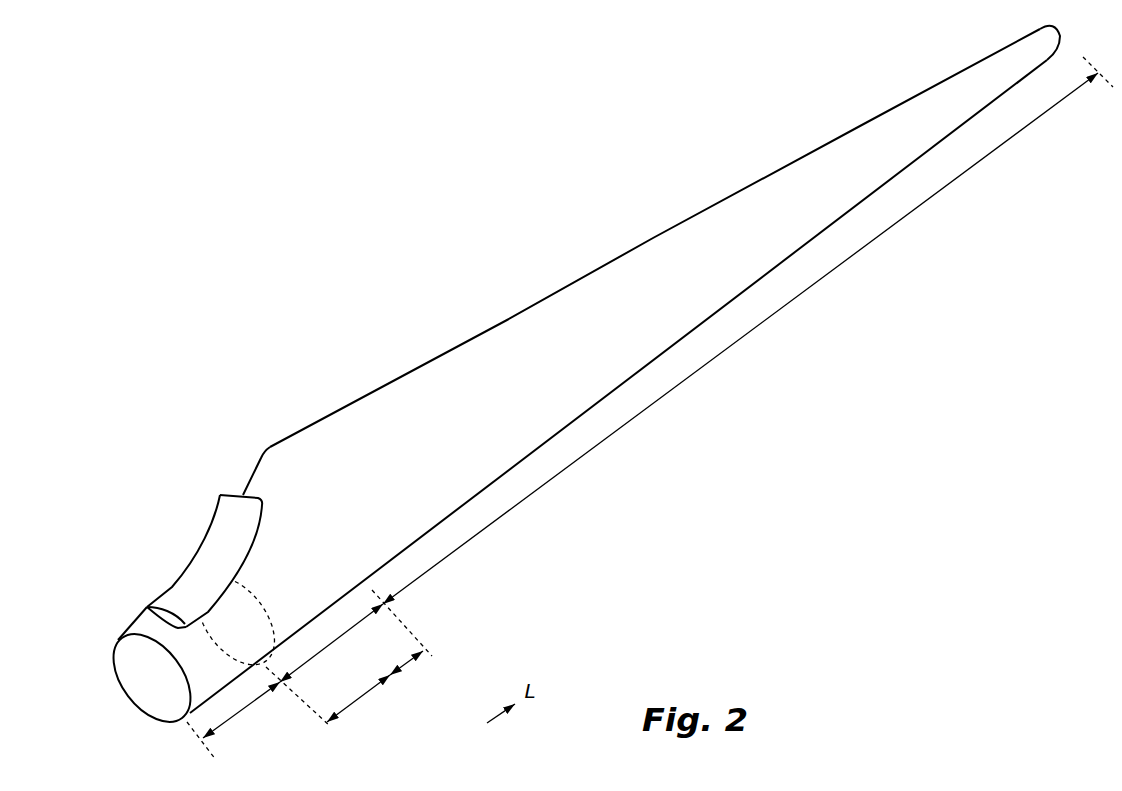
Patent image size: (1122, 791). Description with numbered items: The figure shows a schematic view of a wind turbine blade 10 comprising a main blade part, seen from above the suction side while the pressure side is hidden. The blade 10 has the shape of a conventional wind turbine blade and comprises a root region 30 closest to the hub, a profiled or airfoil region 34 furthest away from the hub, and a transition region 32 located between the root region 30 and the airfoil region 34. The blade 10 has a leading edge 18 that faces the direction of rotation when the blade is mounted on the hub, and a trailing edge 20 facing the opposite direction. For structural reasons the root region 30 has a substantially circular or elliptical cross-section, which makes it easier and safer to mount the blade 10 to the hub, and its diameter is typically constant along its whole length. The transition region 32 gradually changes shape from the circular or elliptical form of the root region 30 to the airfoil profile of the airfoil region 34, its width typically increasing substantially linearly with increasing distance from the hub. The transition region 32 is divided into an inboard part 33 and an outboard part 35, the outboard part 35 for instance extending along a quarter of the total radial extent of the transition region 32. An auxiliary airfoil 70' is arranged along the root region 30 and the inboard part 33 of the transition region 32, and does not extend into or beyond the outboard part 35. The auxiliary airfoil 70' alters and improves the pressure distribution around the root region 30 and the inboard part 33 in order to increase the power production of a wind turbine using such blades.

The wind turbine blade 10 is at (579, 381).
The leading edge 18 is at (773, 268).
The trailing edge 20 is at (783, 167).
The root region 30 is at (213, 736).
The transition region 32 is at (373, 612).
The inboard part of the transition region 33 is at (367, 692).
The airfoil region 34 is at (670, 393).
The outboard part of the transition region 35 is at (408, 659).
The auxiliary airfoil 70' is at (192, 580).